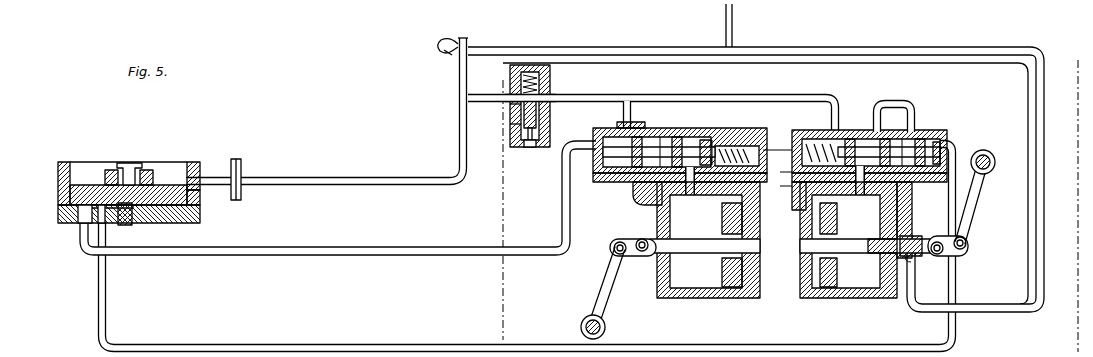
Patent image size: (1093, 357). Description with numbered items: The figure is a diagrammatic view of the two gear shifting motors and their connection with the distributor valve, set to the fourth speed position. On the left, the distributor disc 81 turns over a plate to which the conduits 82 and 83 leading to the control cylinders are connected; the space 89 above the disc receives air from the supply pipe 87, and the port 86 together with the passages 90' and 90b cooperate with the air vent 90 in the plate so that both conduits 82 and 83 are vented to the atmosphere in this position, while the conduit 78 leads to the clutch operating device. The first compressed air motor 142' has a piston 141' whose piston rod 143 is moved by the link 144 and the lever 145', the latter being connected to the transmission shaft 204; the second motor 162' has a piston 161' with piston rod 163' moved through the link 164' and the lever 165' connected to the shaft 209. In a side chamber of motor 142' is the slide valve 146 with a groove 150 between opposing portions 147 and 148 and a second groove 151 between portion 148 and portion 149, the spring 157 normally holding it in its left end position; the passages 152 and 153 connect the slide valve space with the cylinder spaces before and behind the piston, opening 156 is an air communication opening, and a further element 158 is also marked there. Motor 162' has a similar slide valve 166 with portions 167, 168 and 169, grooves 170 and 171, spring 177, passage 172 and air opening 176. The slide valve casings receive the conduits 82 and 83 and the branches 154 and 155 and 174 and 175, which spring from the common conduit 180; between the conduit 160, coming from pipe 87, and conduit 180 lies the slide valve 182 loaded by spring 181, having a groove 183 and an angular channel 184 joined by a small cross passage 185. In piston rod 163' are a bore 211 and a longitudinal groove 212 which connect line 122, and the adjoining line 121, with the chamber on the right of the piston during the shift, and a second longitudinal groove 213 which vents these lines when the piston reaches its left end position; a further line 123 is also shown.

The conduit 78 is at (242, 194).
The distributor disc 81 is at (58, 200).
The conduit 82 is at (80, 240).
The conduit 83 is at (104, 290).
The port 86 is at (58, 216).
The supply pipe 87 is at (383, 184).
The space above the distributor disc 89 is at (58, 169).
The air vent 90 is at (123, 224).
The passage 90' is at (79, 205).
The passage 90b is at (150, 224).
The line 121 is at (446, 62).
The line 122 is at (885, 44).
The center line / casing 123 is at (1078, 346).
The piston 141' is at (705, 251).
The compressed air motor 142' is at (702, 262).
The piston rod 143 is at (694, 253).
The link 144 is at (612, 250).
The lever 145' is at (586, 287).
The slide valve 146 is at (620, 155).
The portion of slide valve 147 is at (640, 146).
The portion of slide valve 148 is at (680, 146).
The portion of slide valve 149 is at (744, 146).
The groove 150 is at (679, 131).
The second groove 151 is at (712, 146).
The passage 152 is at (636, 204).
The passage 153 is at (782, 189).
The conduit branch 154 is at (630, 101).
The conduit branch 155 is at (735, 136).
The air communication opening 156 is at (670, 136).
The spring 157 is at (802, 152).
The port 158 is at (780, 176).
The conduit 160 is at (500, 86).
The piston 161' is at (863, 251).
The compressed air motor 162' is at (849, 262).
The piston rod 163' is at (865, 257).
The link 164' is at (969, 247).
The lever 165' is at (985, 203).
The slide valve 166 is at (938, 146).
The portion of slide valve 167 is at (922, 142).
The portion of slide valve 168 is at (912, 108).
The portion of slide valve 169 is at (875, 152).
The groove 170 is at (888, 142).
The groove 171 is at (850, 138).
The passage 172 is at (912, 191).
The conduit branch 174 is at (838, 106).
The conduit branch 175 is at (904, 140).
The air communication opening 176 is at (886, 110).
The spring 177 is at (778, 139).
The common conduit 180 is at (550, 113).
The spring 181 is at (552, 80).
The slide valve 182 is at (530, 146).
The groove 183 is at (552, 113).
The angular channel 184 is at (510, 108).
The small cross passage 185 is at (510, 126).
The shaft 204 is at (606, 328).
The shaft 209 is at (990, 157).
The bore 211 is at (914, 234).
The longitudinal groove 212 is at (878, 238).
The second longitudinal groove 213 is at (914, 262).